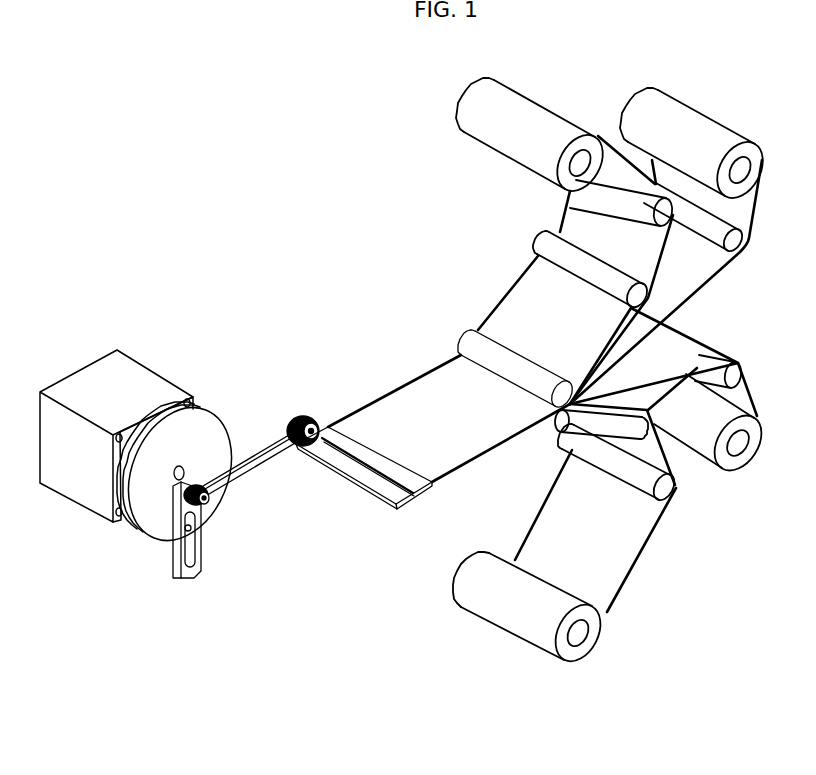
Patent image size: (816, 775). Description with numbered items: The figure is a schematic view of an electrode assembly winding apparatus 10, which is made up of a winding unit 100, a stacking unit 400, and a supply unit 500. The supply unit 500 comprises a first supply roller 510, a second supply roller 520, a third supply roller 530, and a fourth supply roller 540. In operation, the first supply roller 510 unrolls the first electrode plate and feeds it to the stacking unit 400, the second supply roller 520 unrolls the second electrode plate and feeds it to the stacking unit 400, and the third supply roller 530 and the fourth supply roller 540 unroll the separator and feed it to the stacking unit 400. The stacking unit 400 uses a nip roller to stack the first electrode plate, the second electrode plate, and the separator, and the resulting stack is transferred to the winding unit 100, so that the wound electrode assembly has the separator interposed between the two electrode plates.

The electrode assembly winding apparatus 10 is at (44, 59).
The winding unit 100 is at (168, 360).
The stacking unit 400 is at (445, 332).
The supply unit 500 is at (518, 653).
The first supply roller 510 is at (537, 100).
The second supply roller 520 is at (697, 460).
The third supply roller 530 is at (708, 123).
The fourth supply roller 540 is at (478, 612).